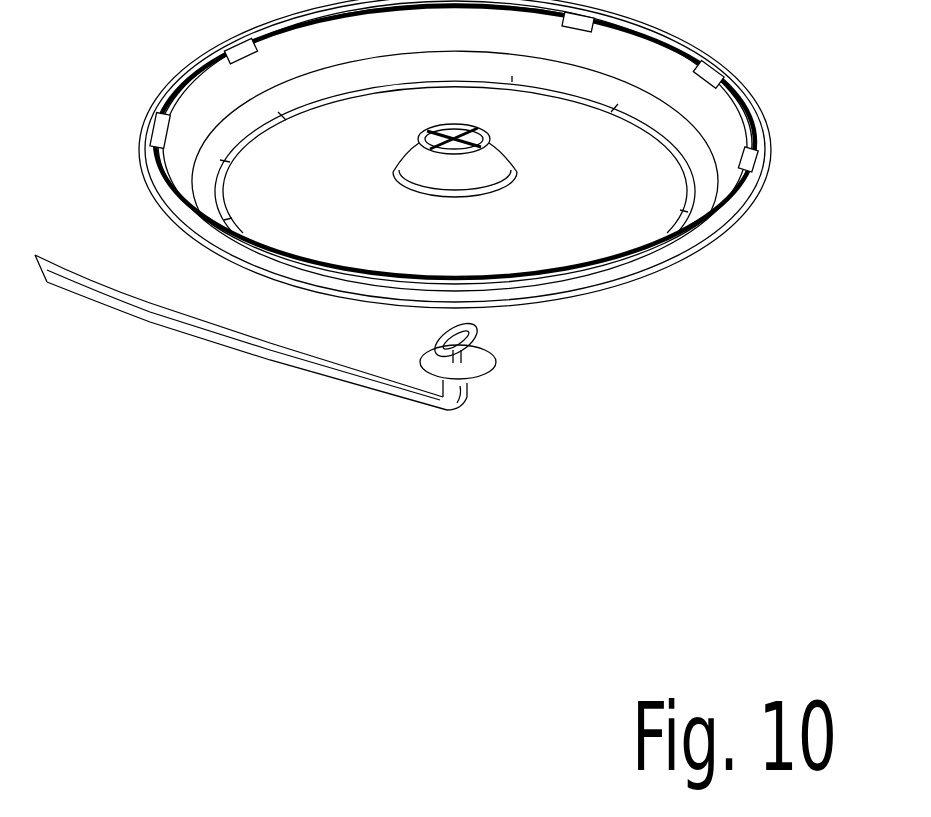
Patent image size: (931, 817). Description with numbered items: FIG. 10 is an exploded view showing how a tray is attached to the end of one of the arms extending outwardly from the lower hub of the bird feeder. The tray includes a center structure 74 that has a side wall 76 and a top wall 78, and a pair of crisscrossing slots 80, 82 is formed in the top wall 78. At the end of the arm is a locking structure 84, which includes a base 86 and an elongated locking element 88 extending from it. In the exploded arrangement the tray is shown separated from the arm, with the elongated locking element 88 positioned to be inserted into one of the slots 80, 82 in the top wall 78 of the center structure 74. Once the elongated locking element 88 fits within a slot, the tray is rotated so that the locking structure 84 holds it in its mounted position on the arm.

The center structure 74 is at (362, 164).
The side wall 76 is at (490, 152).
The top wall 78 is at (486, 134).
The slot 80 is at (470, 131).
The slot 82 is at (442, 132).
The locking structure 84 is at (472, 371).
The base 86 is at (478, 366).
The elongated locking element 88 is at (450, 335).